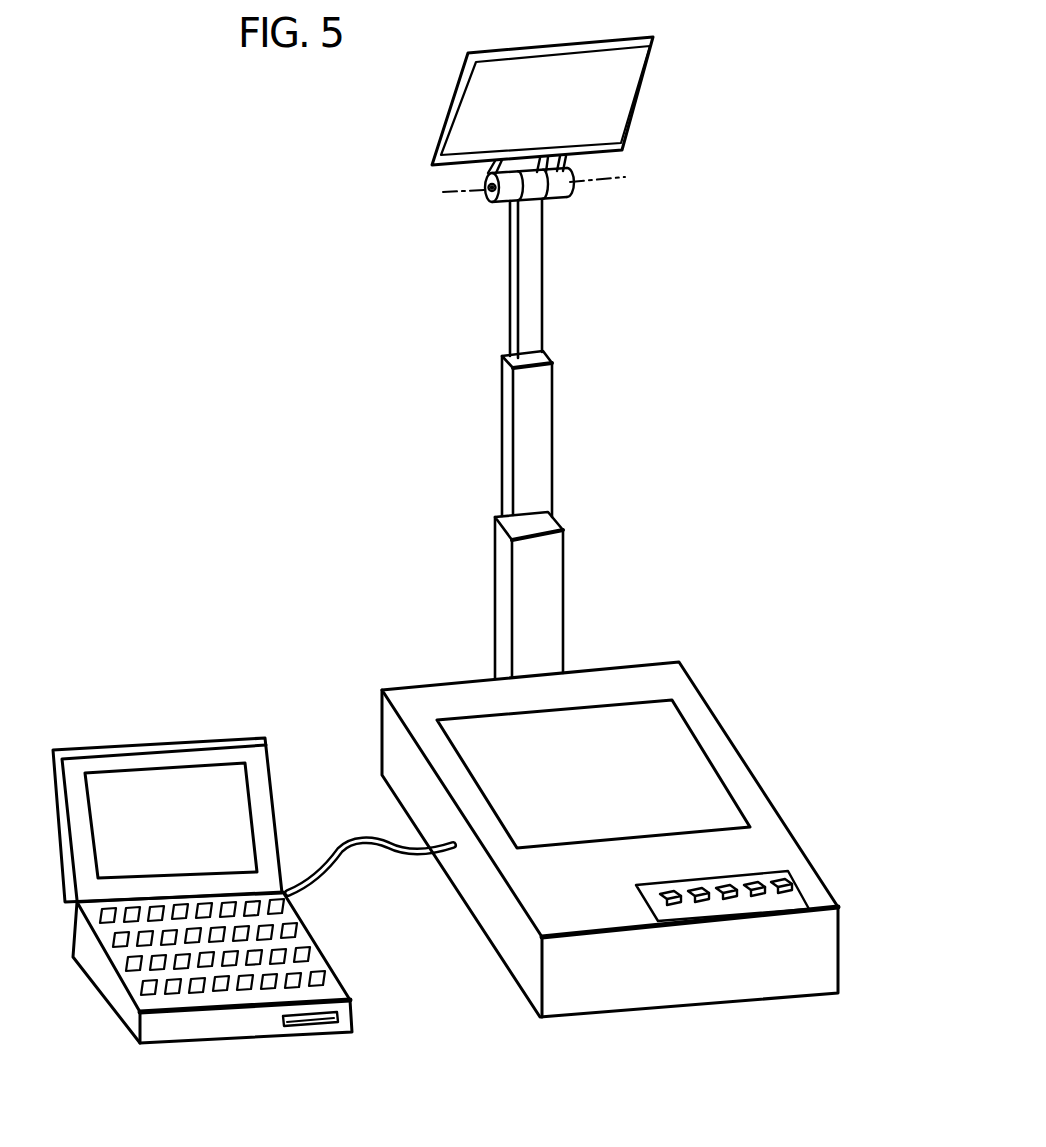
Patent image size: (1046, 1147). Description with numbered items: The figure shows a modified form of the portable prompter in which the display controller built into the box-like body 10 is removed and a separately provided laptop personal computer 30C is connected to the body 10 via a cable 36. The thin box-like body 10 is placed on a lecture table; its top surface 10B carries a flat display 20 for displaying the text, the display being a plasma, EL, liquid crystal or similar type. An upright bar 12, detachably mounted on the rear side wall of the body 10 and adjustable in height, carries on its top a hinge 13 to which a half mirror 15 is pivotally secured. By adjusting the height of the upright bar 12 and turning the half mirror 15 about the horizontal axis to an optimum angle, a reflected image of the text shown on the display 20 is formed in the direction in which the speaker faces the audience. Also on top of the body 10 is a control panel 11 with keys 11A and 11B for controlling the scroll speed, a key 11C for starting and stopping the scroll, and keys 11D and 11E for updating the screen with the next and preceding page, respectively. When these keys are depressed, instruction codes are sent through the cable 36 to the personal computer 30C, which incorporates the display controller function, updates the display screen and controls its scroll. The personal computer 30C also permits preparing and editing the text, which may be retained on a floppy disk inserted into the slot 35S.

The half mirror 15 is at (633, 87).
The hinge 13 is at (488, 205).
The upright bar 12 is at (548, 435).
The box-like body 10 is at (636, 871).
The top surface of base 10B is at (683, 688).
The flat display 20 is at (695, 767).
The control panel 11 is at (756, 967).
The key 11A is at (673, 907).
The key 11B is at (702, 905).
The key 11C is at (730, 902).
The key 11D is at (758, 899).
The key 11E is at (793, 887).
The cable 36 is at (350, 843).
The laptop personal computer 30C is at (232, 914).
The slot 35S is at (310, 1024).